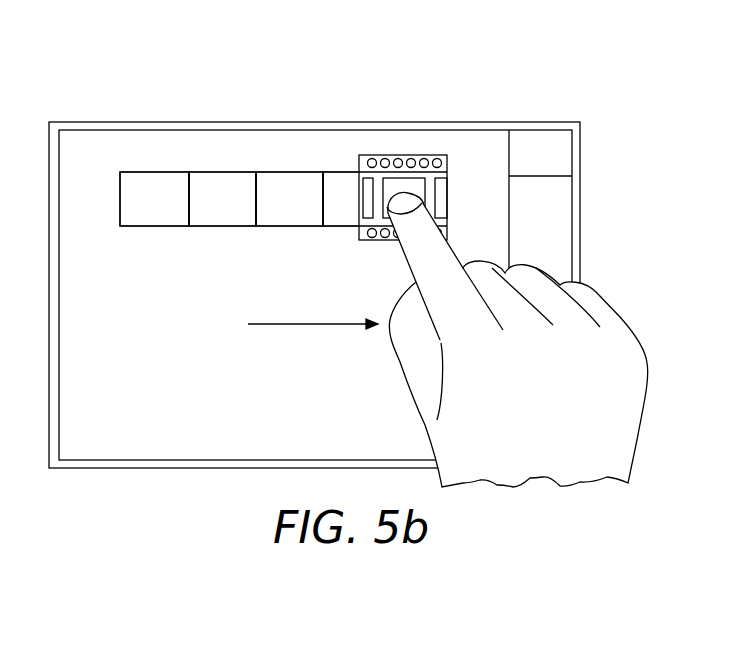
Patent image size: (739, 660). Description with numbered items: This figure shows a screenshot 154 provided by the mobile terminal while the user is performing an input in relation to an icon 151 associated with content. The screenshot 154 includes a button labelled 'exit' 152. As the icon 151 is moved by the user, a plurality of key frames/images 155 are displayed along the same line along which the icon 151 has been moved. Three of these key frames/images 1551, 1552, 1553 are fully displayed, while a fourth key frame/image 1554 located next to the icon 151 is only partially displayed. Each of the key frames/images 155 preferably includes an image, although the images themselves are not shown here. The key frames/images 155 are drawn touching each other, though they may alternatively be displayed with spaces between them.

The icon 151 is at (360, 212).
The exit button 152 is at (538, 143).
The screenshot 154 is at (106, 490).
The key frames/images 155 is at (386, 83).
The first key frame/image 1551 is at (152, 171).
The second key frame/image 1552 is at (220, 171).
The third key frame/image 1553 is at (287, 171).
The fourth key frame/image 1554 is at (344, 171).